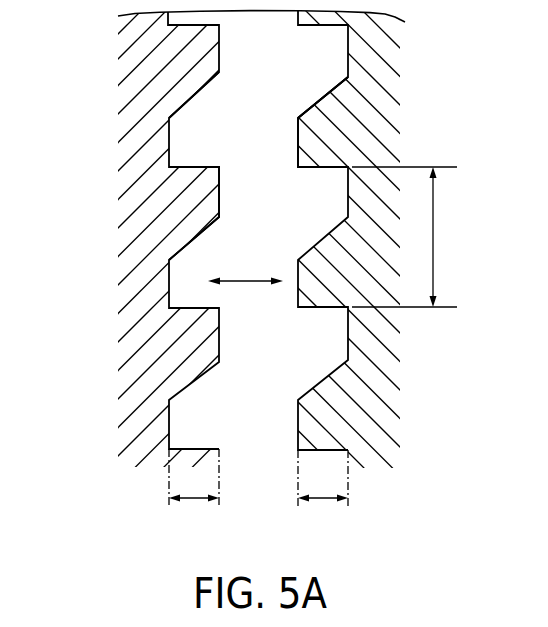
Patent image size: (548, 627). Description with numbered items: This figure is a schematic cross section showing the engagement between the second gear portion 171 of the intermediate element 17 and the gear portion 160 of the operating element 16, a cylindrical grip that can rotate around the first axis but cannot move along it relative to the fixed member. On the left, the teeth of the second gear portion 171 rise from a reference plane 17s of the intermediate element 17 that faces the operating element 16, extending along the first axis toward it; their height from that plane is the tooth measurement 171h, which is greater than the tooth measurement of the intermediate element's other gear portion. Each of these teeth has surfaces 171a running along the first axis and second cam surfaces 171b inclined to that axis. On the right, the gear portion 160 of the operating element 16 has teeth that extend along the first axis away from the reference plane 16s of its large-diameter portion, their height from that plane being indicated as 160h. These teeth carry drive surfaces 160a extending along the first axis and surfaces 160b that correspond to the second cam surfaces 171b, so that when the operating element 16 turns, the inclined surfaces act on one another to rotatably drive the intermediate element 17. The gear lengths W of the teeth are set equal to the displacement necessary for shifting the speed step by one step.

The operating element 16 is at (377, 378).
The intermediate element 17 is at (132, 351).
The gear portion 160 is at (297, 131).
The drive surfaces 160a is at (320, 168).
The surfaces corresponding to the second cam surfaces 160b is at (333, 88).
The height of the gear teeth 160h is at (323, 497).
The reference plane 16s is at (346, 503).
The second gear portion 171 is at (220, 205).
The surfaces 171a is at (197, 166).
The second cam surfaces 171b is at (190, 98).
The tooth measurement 171h is at (195, 497).
The reference plane 17s is at (172, 503).
The gear lengths W is at (404, 237).